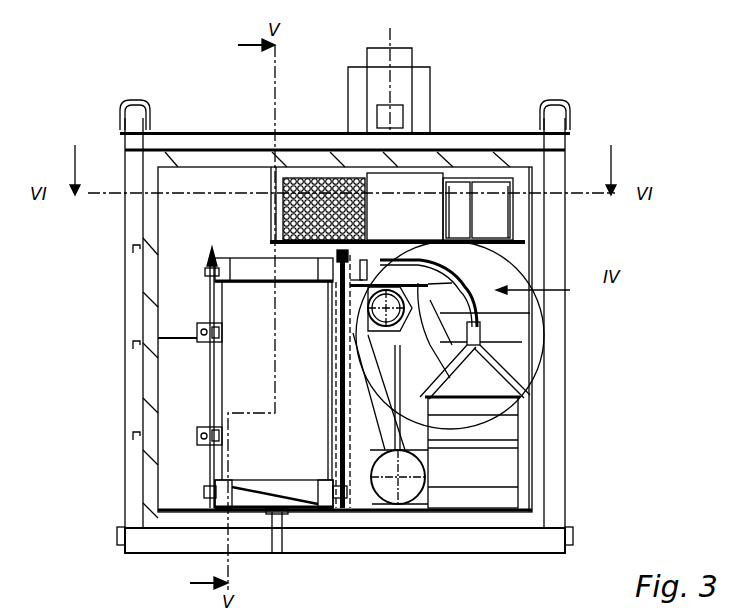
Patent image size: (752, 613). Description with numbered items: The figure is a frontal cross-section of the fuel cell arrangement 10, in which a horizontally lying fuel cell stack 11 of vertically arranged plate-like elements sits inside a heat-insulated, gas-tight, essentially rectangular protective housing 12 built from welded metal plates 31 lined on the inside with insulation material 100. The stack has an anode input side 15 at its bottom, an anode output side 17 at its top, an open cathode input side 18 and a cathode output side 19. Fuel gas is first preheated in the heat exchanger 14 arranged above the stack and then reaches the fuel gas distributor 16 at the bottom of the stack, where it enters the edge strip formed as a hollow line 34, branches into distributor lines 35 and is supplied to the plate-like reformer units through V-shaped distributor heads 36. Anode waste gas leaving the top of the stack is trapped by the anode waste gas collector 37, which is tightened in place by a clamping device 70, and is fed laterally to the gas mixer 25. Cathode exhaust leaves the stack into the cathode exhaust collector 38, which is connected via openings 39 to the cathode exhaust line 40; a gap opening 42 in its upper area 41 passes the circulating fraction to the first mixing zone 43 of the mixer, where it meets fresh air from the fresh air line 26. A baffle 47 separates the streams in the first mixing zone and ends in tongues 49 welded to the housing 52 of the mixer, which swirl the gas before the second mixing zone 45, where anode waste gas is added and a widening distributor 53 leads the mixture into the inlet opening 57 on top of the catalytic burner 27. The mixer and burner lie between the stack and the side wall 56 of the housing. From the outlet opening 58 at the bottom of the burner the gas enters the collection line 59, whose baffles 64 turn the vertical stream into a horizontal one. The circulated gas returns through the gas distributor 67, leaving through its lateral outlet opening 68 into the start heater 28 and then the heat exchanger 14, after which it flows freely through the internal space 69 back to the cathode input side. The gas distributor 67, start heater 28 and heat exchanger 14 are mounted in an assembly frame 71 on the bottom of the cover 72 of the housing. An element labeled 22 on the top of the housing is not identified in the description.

The fuel cell arrangement 10 is at (633, 93).
The fuel cell stack 11 is at (237, 357).
The protective housing 12 is at (132, 363).
The heat exchanger 14 is at (313, 177).
The anode input side 15 is at (300, 513).
The fuel gas distributor 16 is at (245, 500).
The anode output side 17 is at (252, 288).
The cathode input side 18 is at (222, 387).
The cathode output side 19 is at (347, 432).
The outlet duct 22 is at (403, 63).
The gas mixer 25 is at (478, 335).
The fresh air line 26 is at (470, 278).
The catalytic burner 27 is at (522, 417).
The start heater 28 is at (412, 188).
The metal plates 31 is at (207, 150).
The hollow line 34 is at (340, 520).
The distributor lines 35 is at (272, 514).
The V-shaped distributor heads 36 is at (215, 512).
The anode waste gas collector 37 is at (263, 267).
The cathode exhaust collector 38 is at (365, 487).
The openings 39 is at (398, 490).
The cathode exhaust line 40 is at (398, 500).
The upper area 41 is at (342, 312).
The gap opening 42 is at (340, 297).
The first mixing zone 43 is at (406, 300).
The second mixing zone 45 is at (482, 336).
The baffle 47 is at (460, 287).
The tongues 49 is at (470, 351).
The housing of the gas mixer 52 is at (482, 262).
The distributor 53 is at (500, 374).
The side wall 56 is at (470, 312).
The inlet opening 57 is at (520, 413).
The outlet opening 58 is at (508, 412).
The collection line 59 is at (492, 473).
The baffles 64 is at (473, 490).
The gas distributor 67 is at (495, 190).
The lateral outlet opening 68 is at (452, 187).
The internal space 69 is at (175, 250).
The clamping device 70 is at (205, 310).
The assembly frame 71 is at (272, 166).
The cover 72 is at (249, 155).
The insulation material 100 is at (152, 226).